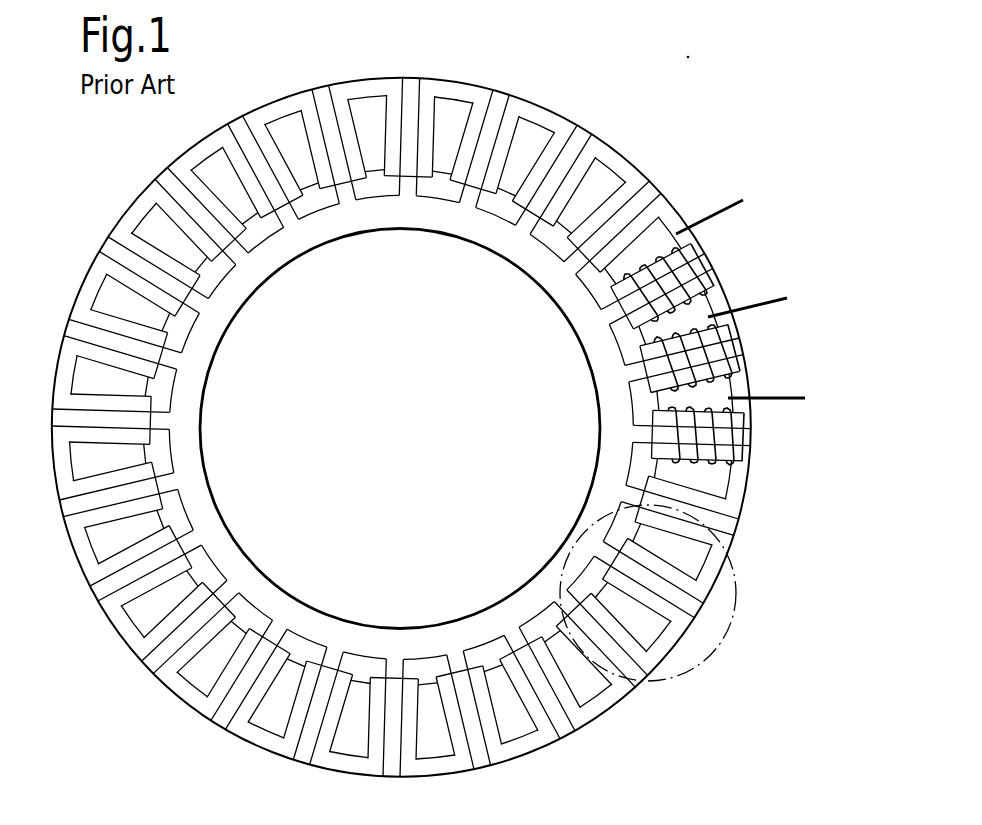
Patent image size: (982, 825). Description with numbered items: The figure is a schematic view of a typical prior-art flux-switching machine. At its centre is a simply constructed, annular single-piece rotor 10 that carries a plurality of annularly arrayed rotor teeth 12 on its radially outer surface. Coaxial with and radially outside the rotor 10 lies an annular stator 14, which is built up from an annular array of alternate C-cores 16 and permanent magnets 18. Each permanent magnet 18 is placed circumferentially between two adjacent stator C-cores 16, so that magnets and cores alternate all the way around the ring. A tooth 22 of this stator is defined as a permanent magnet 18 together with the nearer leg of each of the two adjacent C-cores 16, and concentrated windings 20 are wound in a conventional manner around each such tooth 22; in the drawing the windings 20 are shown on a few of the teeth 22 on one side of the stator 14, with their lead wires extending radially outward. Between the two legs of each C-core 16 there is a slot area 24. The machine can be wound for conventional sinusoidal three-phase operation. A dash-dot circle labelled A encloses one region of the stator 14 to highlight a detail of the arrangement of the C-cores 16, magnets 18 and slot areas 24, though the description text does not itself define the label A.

The rotor 10 is at (530, 258).
The rotor teeth 12 is at (220, 290).
The stator 14 is at (135, 186).
The C-cores 16 is at (673, 635).
The permanent magnets 18 is at (150, 673).
The concentrated windings 20 is at (763, 305).
The tooth 22 is at (164, 495).
The slot area 24 is at (500, 700).
The detail region A is at (595, 520).